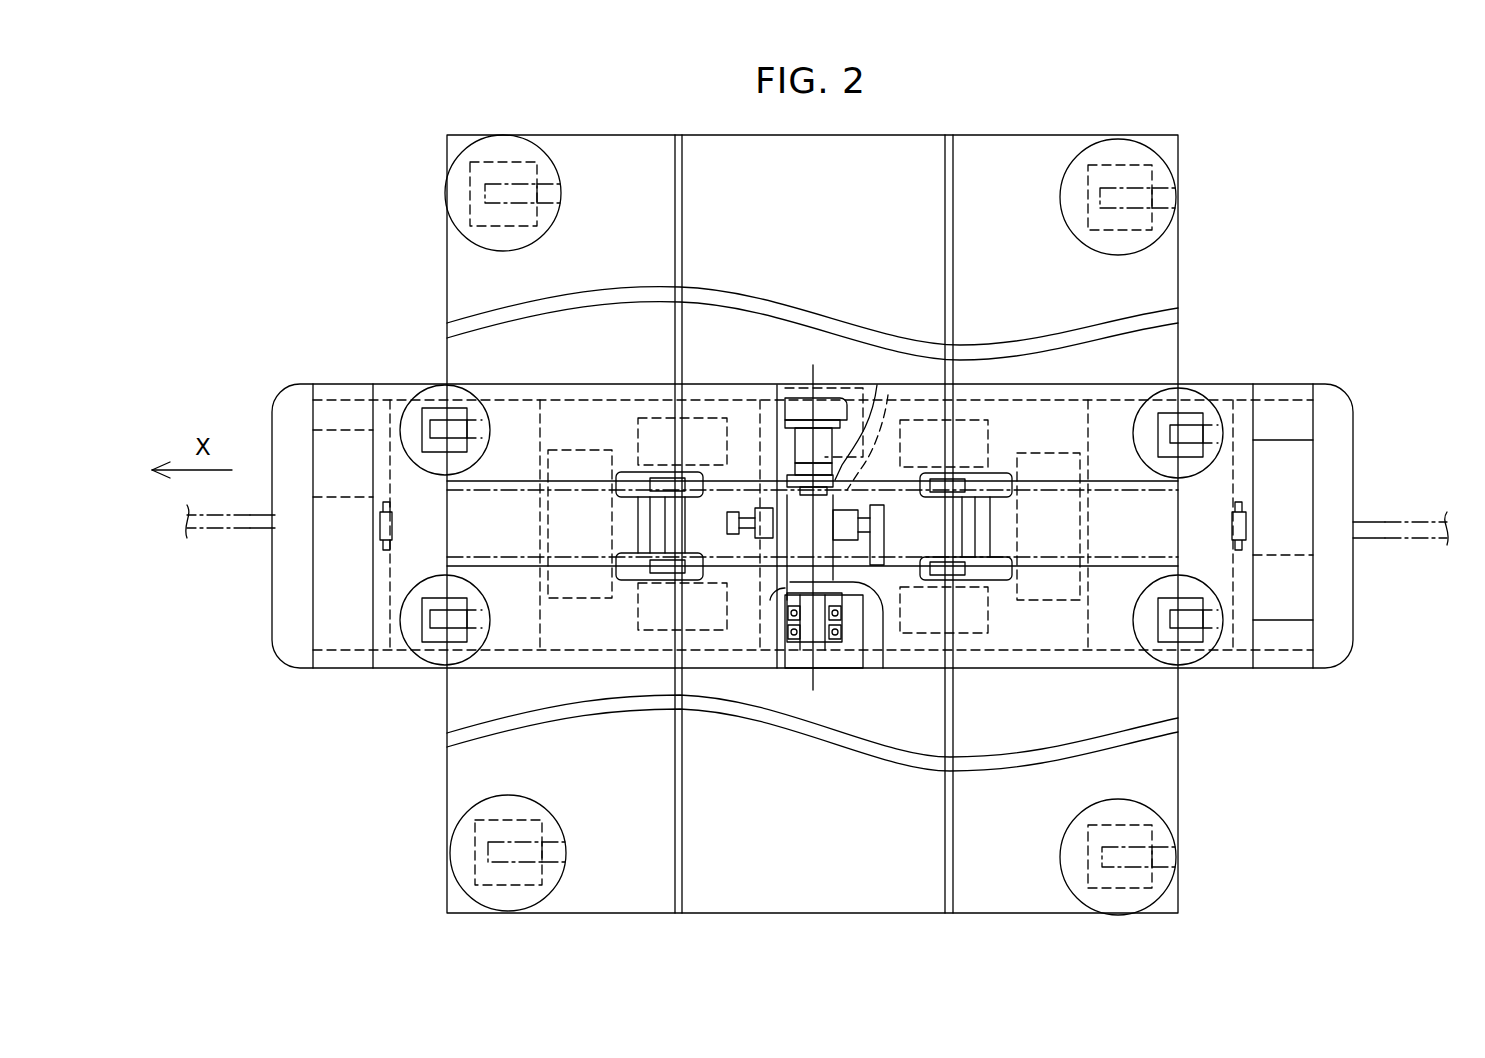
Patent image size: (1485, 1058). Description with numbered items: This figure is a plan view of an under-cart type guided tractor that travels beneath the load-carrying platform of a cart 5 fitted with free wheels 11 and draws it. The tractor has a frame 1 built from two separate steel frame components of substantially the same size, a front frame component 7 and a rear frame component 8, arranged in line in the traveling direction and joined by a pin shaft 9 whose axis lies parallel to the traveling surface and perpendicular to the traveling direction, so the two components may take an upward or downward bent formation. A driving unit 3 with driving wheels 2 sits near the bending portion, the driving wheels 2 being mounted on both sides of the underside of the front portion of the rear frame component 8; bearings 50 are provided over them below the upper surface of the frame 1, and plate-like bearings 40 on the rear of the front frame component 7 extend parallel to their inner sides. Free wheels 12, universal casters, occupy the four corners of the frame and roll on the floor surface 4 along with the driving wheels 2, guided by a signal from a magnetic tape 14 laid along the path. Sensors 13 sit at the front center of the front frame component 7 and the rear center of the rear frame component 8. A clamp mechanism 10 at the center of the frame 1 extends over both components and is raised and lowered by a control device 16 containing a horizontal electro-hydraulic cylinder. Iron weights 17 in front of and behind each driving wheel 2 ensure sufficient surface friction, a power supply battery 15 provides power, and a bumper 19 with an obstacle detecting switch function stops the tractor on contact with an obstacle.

The frame 1 is at (1298, 350).
The driving wheels 2 is at (790, 386).
The driving unit 3 is at (832, 366).
The floor surface 4 is at (1452, 463).
The cart 5 is at (1158, 262).
The front frame component 7 is at (600, 668).
The rear frame component 8 is at (1072, 640).
The pin shaft 9 is at (800, 655).
The clamp mechanism 10 is at (663, 592).
The free wheels 11 is at (522, 215).
The free wheels 12 is at (440, 405).
The sensors 13 is at (390, 522).
The magnetic tape 14 is at (1420, 532).
The power supply battery 15 is at (585, 455).
The control device 16 is at (826, 510).
The weights 17 is at (705, 418).
The bumper 19 is at (280, 610).
The plate-like bearings 40 is at (770, 600).
The bearings 50 is at (825, 642).